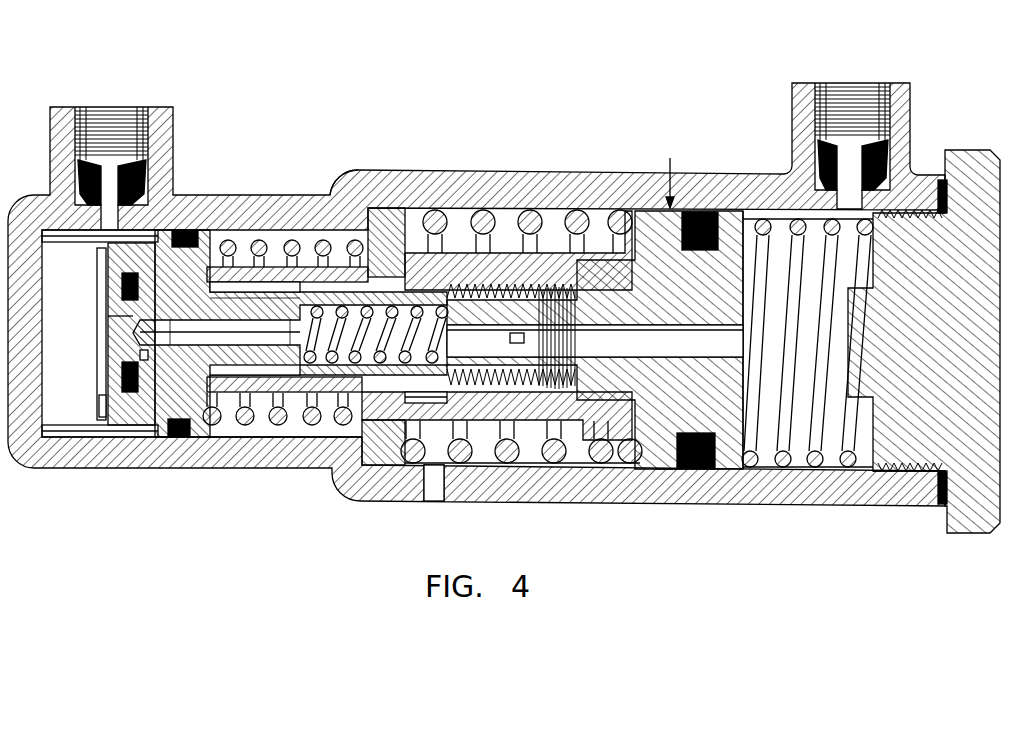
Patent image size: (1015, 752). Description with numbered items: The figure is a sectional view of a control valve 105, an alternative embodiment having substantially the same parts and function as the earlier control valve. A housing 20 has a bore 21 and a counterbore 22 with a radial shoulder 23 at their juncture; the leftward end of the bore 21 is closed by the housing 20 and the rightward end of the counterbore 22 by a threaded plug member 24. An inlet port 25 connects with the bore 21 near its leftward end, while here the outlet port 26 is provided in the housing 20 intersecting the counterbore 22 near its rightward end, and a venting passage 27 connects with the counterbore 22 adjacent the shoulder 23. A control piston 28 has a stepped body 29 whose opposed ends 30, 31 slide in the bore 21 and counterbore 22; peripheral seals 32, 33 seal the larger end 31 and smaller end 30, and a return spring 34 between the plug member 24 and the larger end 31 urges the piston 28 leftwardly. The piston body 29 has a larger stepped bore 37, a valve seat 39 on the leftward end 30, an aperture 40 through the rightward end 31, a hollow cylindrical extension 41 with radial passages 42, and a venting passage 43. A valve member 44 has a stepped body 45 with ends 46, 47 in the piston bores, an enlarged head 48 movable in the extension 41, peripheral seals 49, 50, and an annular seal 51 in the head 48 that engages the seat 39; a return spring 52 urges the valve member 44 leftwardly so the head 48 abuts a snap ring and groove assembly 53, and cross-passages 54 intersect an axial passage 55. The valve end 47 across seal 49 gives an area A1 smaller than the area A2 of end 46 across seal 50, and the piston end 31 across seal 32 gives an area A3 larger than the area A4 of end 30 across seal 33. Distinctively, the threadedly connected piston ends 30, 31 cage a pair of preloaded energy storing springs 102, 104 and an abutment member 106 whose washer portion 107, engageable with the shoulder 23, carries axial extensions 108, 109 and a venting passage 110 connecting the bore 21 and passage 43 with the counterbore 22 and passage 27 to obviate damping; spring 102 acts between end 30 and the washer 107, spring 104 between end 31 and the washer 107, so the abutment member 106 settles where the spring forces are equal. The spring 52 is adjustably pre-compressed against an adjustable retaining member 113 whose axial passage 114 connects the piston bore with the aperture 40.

The control valve 105 is at (478, 128).
The housing 20 is at (716, 192).
The bore 21 is at (62, 438).
The counterbore 22 is at (833, 469).
The radial shoulder 23 is at (338, 203).
The plug member 24 is at (940, 258).
The inlet port 25 is at (143, 125).
The outlet port 26 is at (882, 95).
The venting passage 27 is at (437, 497).
The control piston 28 is at (646, 472).
The stepped body 29 is at (606, 388).
The leftward piston end 30 is at (205, 229).
The rightward piston end 31 is at (704, 302).
The peripheral seal 32 is at (701, 474).
The peripheral seal 33 is at (182, 440).
The return spring 34 is at (783, 468).
The larger stepped bore 37 is at (207, 369).
The valve seat 39 is at (160, 260).
The aperture 40 is at (708, 330).
The hollow cylindrical extension 41 is at (108, 426).
The radially extending passages 42 is at (143, 428).
The venting passage 43 is at (236, 381).
The valve member 44 is at (88, 262).
The stepped body 45 is at (220, 305).
The leftward valve end 46 is at (140, 317).
The rightward valve end 47 is at (308, 354).
The enlarged head 48 is at (112, 292).
The peripheral seal 49 is at (277, 309).
The peripheral seal 50 is at (186, 293).
The annular seal 51 is at (120, 377).
The return spring 52 is at (380, 367).
The snap ring and groove assembly 53 is at (100, 397).
The cross-passages 54 is at (147, 357).
The axially located passage 55 is at (220, 333).
The energy storing spring 102 is at (245, 428).
The energy storing spring 104 is at (560, 463).
The abutment member 106 is at (390, 466).
The washer portion 107 is at (370, 254).
The axial extension 108 is at (551, 253).
The axial extension 109 is at (277, 268).
The venting passage 110 is at (385, 432).
The adjustable retaining member 113 is at (560, 311).
The axial passage 114 is at (513, 347).
The effective fluid pressure responsive area A1 is at (274, 334).
The effective fluid pressure responsive area A2 is at (184, 333).
The effective fluid pressure responsive area A3 is at (663, 487).
The effective fluid pressure responsive area A4 is at (167, 452).